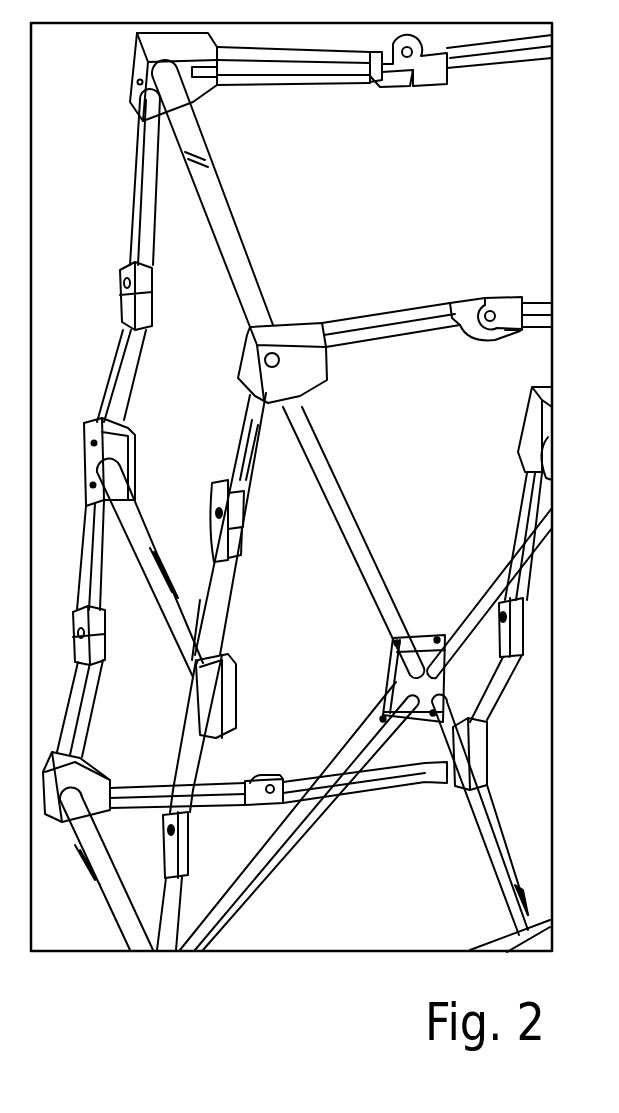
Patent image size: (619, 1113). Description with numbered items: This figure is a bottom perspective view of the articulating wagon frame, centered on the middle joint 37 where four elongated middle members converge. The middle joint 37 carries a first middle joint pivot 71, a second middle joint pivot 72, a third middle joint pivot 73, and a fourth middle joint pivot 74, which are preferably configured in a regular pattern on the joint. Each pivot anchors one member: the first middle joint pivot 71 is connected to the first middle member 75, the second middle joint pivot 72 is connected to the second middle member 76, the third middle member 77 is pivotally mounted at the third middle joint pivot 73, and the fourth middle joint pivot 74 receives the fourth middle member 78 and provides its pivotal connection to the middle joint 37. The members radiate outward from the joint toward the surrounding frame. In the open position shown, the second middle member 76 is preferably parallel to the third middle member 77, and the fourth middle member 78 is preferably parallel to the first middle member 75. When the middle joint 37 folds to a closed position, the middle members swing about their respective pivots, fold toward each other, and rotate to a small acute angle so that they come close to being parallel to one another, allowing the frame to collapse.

The middle joint 37 is at (390, 680).
The first middle joint pivot 71 is at (437, 634).
The second middle joint pivot 72 is at (394, 643).
The third middle joint pivot 73 is at (435, 712).
The fourth middle joint pivot 74 is at (383, 724).
The first middle member 75 is at (510, 582).
The second middle member 76 is at (333, 487).
The third middle member 77 is at (488, 843).
The fourth middle member 78 is at (217, 918).